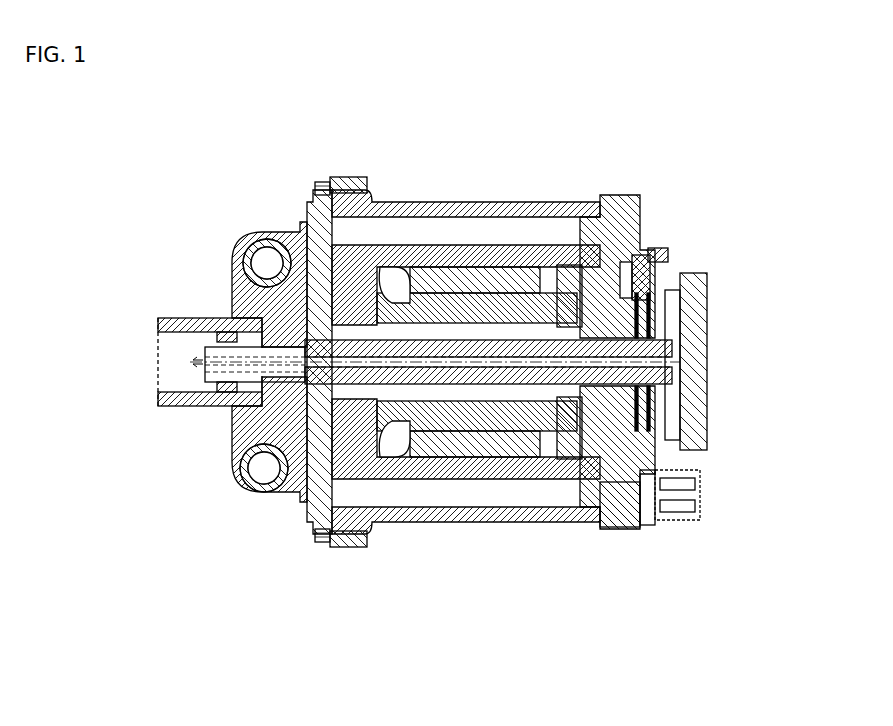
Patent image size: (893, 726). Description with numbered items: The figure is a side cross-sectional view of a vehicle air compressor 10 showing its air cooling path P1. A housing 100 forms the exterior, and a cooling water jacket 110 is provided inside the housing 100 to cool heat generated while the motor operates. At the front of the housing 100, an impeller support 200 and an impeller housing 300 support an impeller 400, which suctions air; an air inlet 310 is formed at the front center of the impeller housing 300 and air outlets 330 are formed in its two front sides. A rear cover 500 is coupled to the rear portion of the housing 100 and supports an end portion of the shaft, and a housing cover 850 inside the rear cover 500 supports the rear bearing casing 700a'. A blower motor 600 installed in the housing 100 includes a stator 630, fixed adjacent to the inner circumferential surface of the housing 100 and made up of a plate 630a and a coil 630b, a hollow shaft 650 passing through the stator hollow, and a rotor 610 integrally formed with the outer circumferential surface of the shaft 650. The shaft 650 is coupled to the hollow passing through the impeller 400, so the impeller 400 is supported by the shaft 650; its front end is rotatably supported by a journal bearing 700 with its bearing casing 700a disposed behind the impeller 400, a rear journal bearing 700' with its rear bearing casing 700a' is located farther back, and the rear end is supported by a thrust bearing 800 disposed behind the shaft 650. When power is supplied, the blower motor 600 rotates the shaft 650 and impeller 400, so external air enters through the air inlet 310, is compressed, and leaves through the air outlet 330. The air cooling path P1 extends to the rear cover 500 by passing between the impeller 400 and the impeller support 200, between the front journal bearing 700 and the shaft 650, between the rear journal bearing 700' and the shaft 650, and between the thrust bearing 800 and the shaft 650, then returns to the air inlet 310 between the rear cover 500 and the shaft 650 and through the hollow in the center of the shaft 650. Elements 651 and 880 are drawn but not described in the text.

The vehicle air compressor 10 is at (113, 124).
The housing 100 is at (460, 202).
The cooling water jacket 110 is at (378, 226).
The impeller support 200 is at (306, 205).
The impeller housing 300 is at (227, 313).
The air inlet 310 is at (177, 360).
The air outlet 330 is at (263, 258).
The impeller 400 is at (252, 300).
The rear cover 500 is at (695, 393).
The blower motor 600 is at (367, 645).
The rotor 610 is at (517, 482).
The stator 630 is at (483, 598).
The plate 630a is at (463, 402).
The coil 630b is at (428, 460).
The shaft 650 is at (388, 470).
The fastening bolt 651 is at (660, 252).
The journal bearing 700 is at (245, 488).
The bearing casing 700a is at (269, 483).
The rear journal bearing 700' is at (612, 535).
The rear bearing casing 700a' is at (672, 531).
The thrust bearing 800 is at (675, 480).
The housing cover 850 is at (597, 202).
The seal 880 is at (677, 250).
The air cooling path P1 is at (707, 302).